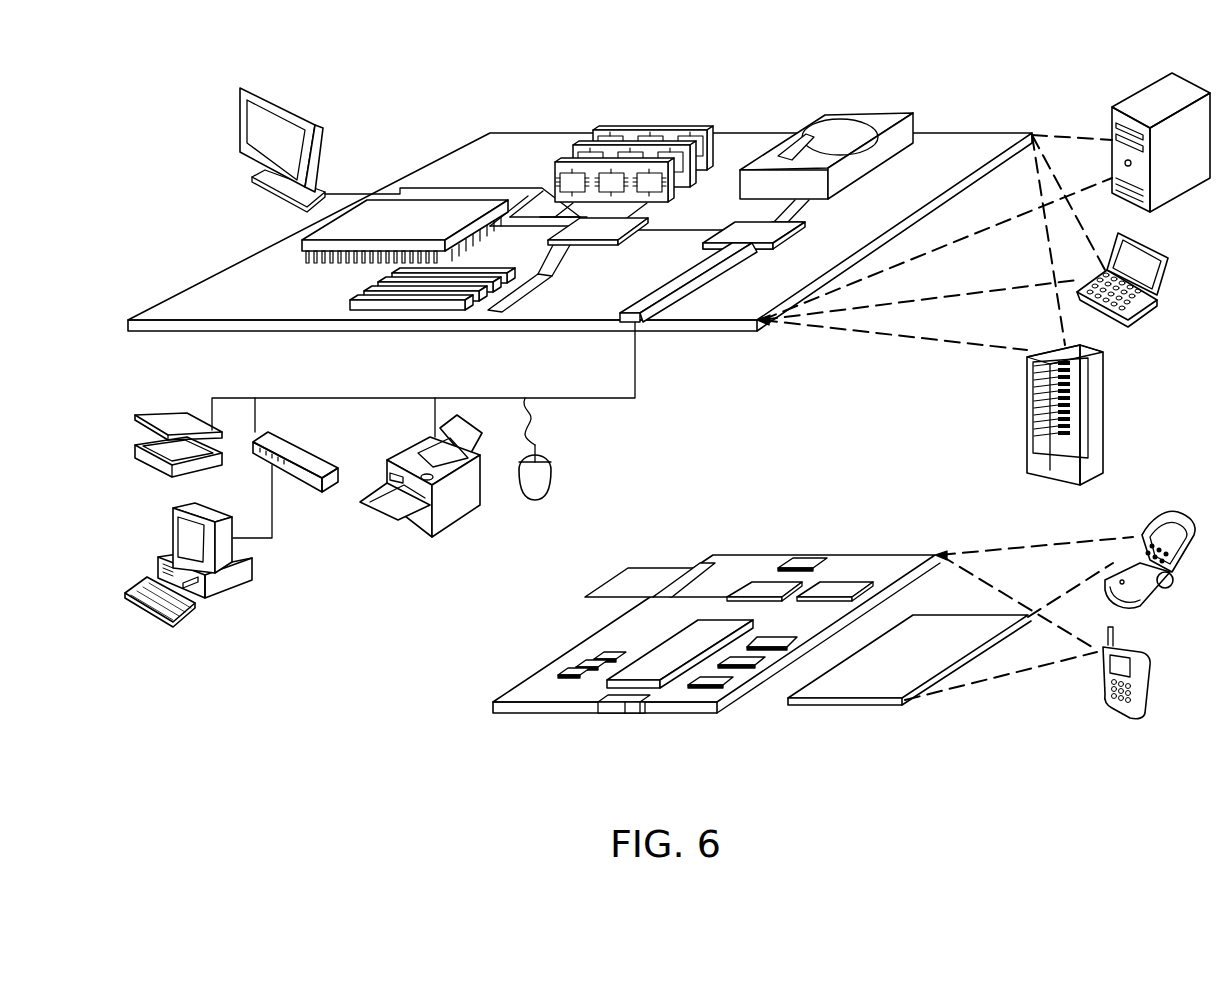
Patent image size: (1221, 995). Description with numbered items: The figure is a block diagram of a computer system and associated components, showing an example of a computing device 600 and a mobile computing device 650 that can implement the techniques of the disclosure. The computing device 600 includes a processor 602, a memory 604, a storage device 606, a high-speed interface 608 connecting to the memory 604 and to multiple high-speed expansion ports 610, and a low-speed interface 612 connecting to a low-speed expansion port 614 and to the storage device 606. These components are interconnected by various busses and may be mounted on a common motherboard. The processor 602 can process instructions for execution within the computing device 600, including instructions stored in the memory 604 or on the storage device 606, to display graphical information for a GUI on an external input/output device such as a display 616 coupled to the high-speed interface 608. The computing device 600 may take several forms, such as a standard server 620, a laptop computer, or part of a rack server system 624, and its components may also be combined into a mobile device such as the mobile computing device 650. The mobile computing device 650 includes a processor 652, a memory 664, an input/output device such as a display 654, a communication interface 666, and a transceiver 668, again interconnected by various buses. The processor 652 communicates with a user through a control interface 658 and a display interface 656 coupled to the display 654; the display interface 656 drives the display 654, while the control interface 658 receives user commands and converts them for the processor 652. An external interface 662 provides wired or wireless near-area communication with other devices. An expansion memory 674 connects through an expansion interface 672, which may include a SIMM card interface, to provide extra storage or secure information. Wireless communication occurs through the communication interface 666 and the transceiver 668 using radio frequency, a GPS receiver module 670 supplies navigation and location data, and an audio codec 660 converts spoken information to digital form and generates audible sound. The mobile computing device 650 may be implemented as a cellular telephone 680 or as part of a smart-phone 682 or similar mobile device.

The computing device 600 is at (416, 107).
The processor 602 is at (302, 243).
The memory 604 is at (598, 128).
The storage device 606 is at (822, 115).
The high-speed interface 608 is at (576, 226).
The high-speed expansion ports 610 is at (367, 298).
The low-speed interface 612 is at (738, 232).
The low-speed expansion port 614 is at (645, 323).
The display 616 is at (250, 87).
The standard server 620 is at (1112, 121).
The rack server system 624 is at (1027, 427).
The mobile computing device 650 is at (468, 716).
The processor 652 is at (656, 675).
The display 654 is at (870, 688).
The display interface 656 is at (716, 684).
The control interface 658 is at (746, 664).
The audio codec 660 is at (766, 647).
The external interface 662 is at (623, 703).
The memory 664 is at (583, 663).
The communication interface 666 is at (765, 588).
The transceiver 668 is at (835, 588).
The GPS receiver module 670 is at (810, 556).
The expansion interface 672 is at (700, 567).
The expansion memory 674 is at (634, 568).
The cellular telephone 680 is at (1153, 520).
The smart-phone 682 is at (1103, 677).